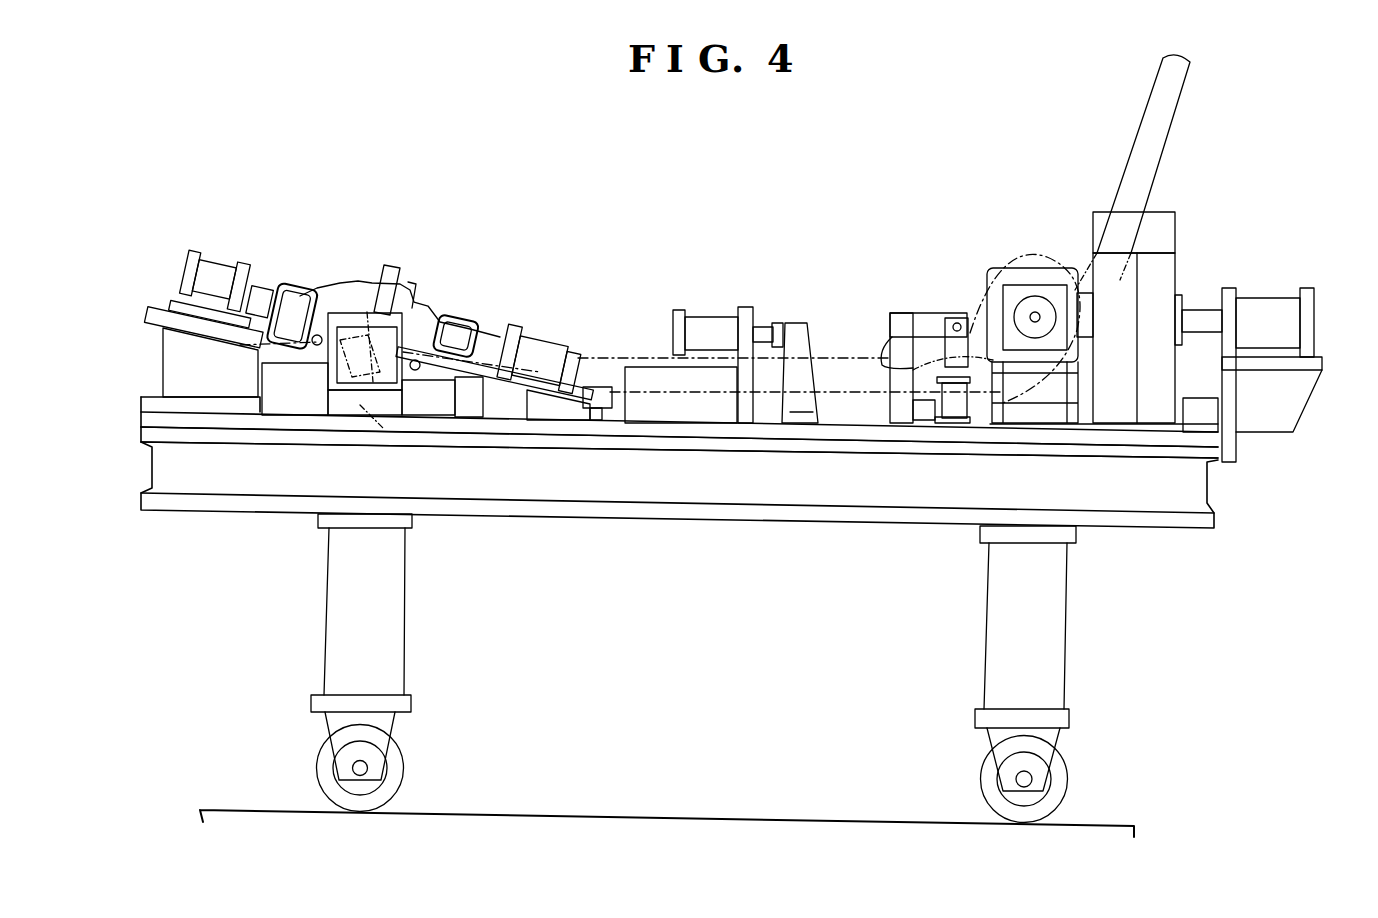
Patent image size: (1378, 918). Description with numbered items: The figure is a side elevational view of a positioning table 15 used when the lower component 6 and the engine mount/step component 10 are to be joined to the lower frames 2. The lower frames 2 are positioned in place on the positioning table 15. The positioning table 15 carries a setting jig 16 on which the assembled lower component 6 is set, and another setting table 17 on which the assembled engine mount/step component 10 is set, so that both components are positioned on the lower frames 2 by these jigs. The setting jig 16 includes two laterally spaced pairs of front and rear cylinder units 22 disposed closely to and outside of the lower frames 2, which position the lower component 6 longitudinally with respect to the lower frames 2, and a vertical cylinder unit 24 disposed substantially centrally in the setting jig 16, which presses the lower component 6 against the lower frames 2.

The lower frames 2 is at (627, 357).
The lower component 6 is at (350, 283).
The engine mount/step component 10 is at (878, 343).
The positioning table 15 is at (650, 483).
The setting jig 16 is at (304, 437).
The setting table 17 is at (881, 442).
The front and rear cylinder units 22 is at (212, 273).
The vertical cylinder unit 24 is at (365, 408).